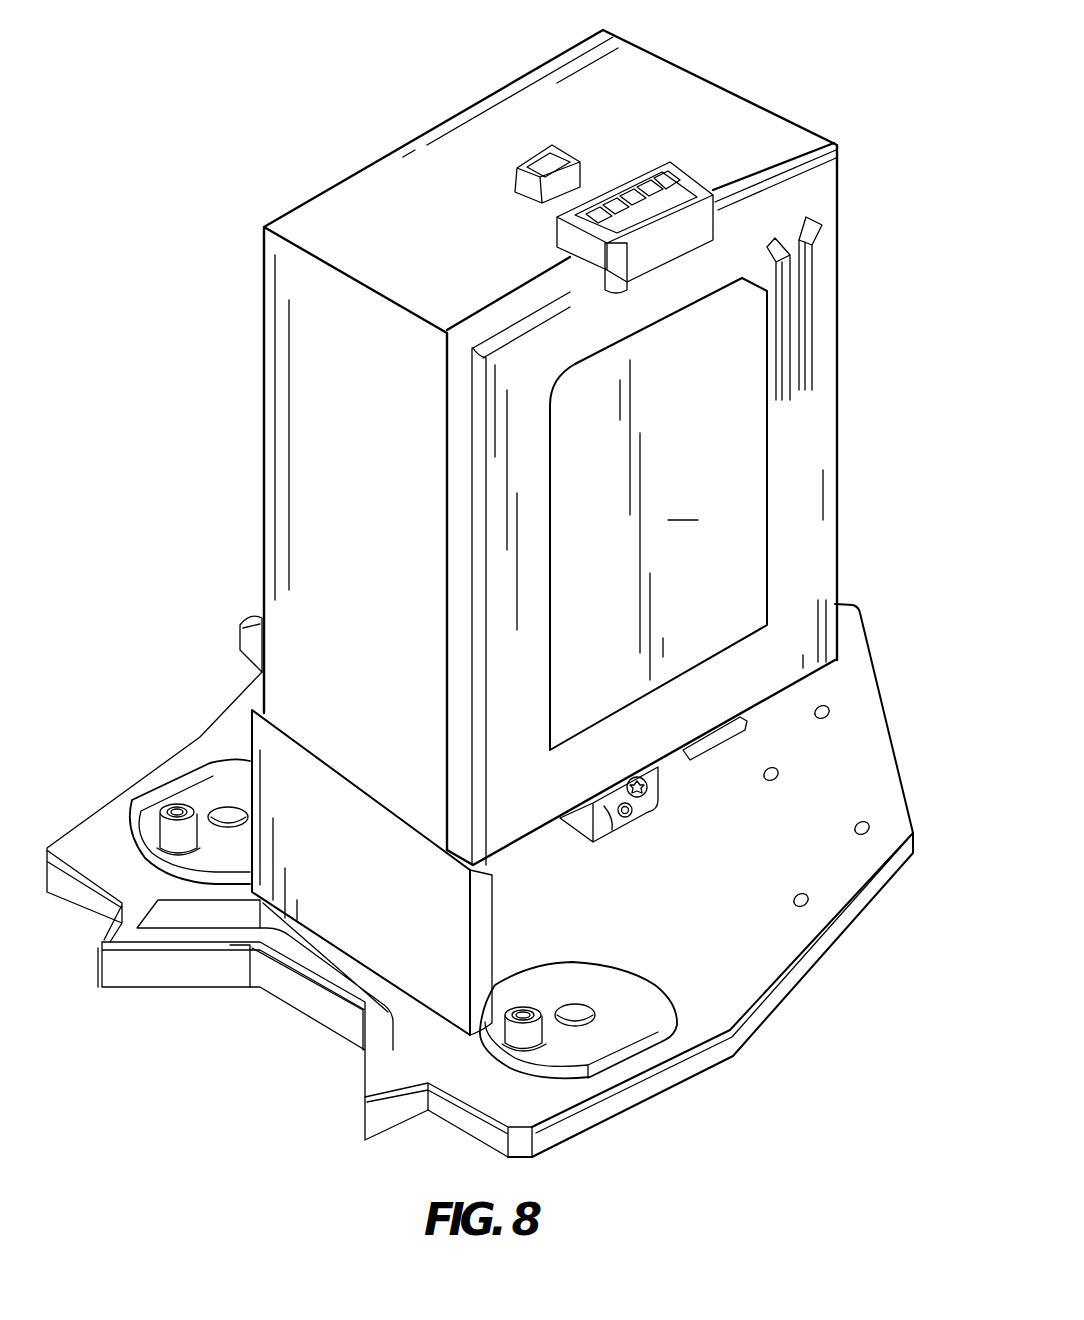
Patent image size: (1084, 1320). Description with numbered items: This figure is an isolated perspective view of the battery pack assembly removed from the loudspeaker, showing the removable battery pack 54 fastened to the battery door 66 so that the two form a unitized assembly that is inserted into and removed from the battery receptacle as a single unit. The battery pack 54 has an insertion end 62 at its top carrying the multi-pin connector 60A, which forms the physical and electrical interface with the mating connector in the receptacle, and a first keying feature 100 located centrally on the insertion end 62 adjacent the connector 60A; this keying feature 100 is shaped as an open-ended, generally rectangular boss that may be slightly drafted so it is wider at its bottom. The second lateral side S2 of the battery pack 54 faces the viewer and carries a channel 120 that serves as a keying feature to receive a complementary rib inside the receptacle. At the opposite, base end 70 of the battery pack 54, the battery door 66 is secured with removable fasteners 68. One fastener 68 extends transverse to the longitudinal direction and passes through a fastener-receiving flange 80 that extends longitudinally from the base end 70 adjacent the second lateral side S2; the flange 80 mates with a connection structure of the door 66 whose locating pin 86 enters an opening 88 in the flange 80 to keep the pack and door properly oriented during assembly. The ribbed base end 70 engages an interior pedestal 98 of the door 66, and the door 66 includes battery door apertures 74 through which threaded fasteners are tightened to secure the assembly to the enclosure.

The removable battery pack 54 is at (297, 313).
The insertion end 62 is at (653, 98).
The first keying feature 100 is at (525, 136).
The multi-pin connector 60A is at (652, 195).
The second lateral side S2 is at (658, 514).
The channel 120 is at (806, 302).
The battery door 66 is at (853, 773).
The base end 70 is at (803, 679).
The battery door aperture 74 is at (228, 806).
The interior pedestal 98 is at (387, 905).
The removable fastener 68 is at (650, 790).
The fastener-receiving flange 80 is at (660, 778).
The locating pin 86 is at (633, 814).
The opening 88 is at (610, 812).